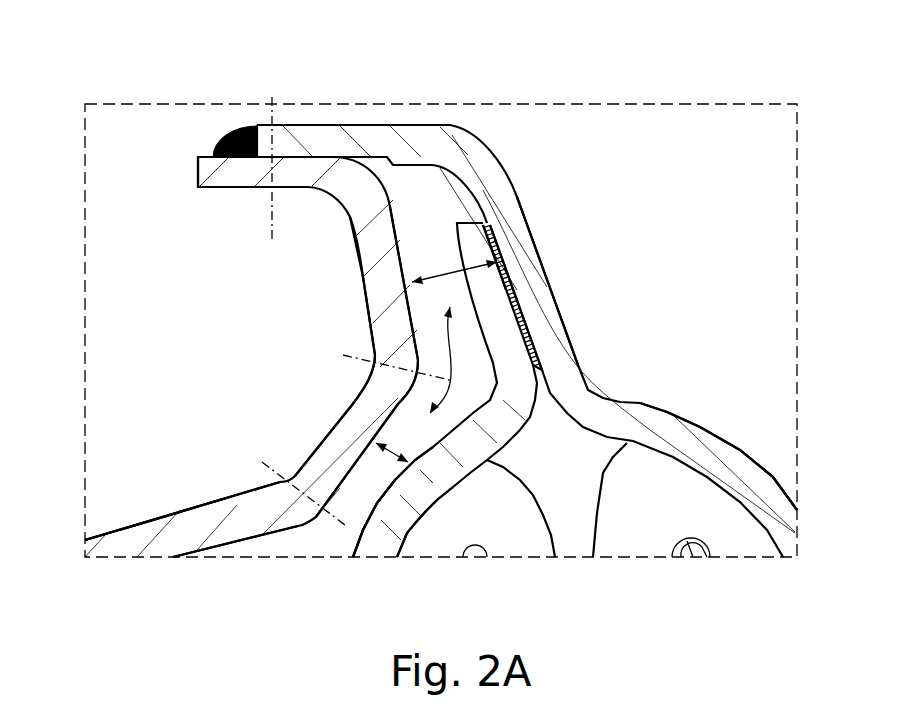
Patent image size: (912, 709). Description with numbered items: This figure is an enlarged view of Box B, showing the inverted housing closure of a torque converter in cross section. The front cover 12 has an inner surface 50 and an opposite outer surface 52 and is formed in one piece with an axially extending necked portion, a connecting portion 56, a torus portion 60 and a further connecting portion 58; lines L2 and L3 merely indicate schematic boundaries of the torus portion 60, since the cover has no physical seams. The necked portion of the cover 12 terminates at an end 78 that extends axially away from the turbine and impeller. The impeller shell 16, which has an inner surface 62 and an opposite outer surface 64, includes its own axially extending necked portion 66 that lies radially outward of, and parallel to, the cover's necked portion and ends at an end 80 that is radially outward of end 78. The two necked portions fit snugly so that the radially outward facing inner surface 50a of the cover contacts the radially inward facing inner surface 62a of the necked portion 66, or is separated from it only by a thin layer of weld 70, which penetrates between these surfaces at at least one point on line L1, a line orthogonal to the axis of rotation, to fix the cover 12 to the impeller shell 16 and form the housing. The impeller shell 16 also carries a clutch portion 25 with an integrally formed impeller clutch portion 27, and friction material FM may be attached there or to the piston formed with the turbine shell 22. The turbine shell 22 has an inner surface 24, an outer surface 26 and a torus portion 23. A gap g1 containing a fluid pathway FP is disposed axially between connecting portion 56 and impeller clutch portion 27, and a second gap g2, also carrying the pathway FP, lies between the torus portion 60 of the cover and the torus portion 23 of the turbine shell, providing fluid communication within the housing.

The Box B is at (692, 104).
The line L1 is at (272, 217).
The line L2 is at (343, 355).
The line L3 is at (262, 462).
The front cover 12 is at (103, 535).
The impeller shell 16 is at (763, 475).
The turbine shell 22 is at (465, 413).
The torus portion 23 is at (395, 482).
The inner surface 24 is at (415, 525).
The clutch portion 25 is at (542, 251).
The outer surface 26 is at (367, 528).
The impeller clutch portion 27 is at (520, 313).
The inner surface 50 is at (286, 527).
The inner surface 50a is at (285, 160).
The outer surface 52 is at (230, 496).
The connecting portion 56 is at (360, 272).
The connecting portion 58 is at (168, 514).
The torus portion 60 is at (347, 395).
The inner surface 62 is at (607, 427).
The inner surface 62a is at (285, 160).
The outer surface 64 is at (656, 395).
The axially extending necked portion 66 is at (347, 118).
The weld 70 is at (227, 157).
The end 78 is at (197, 170).
The end 80 is at (257, 130).
The friction material FM is at (497, 262).
The pathway FP is at (445, 332).
The gap g1 is at (450, 272).
The gap g2 is at (376, 443).